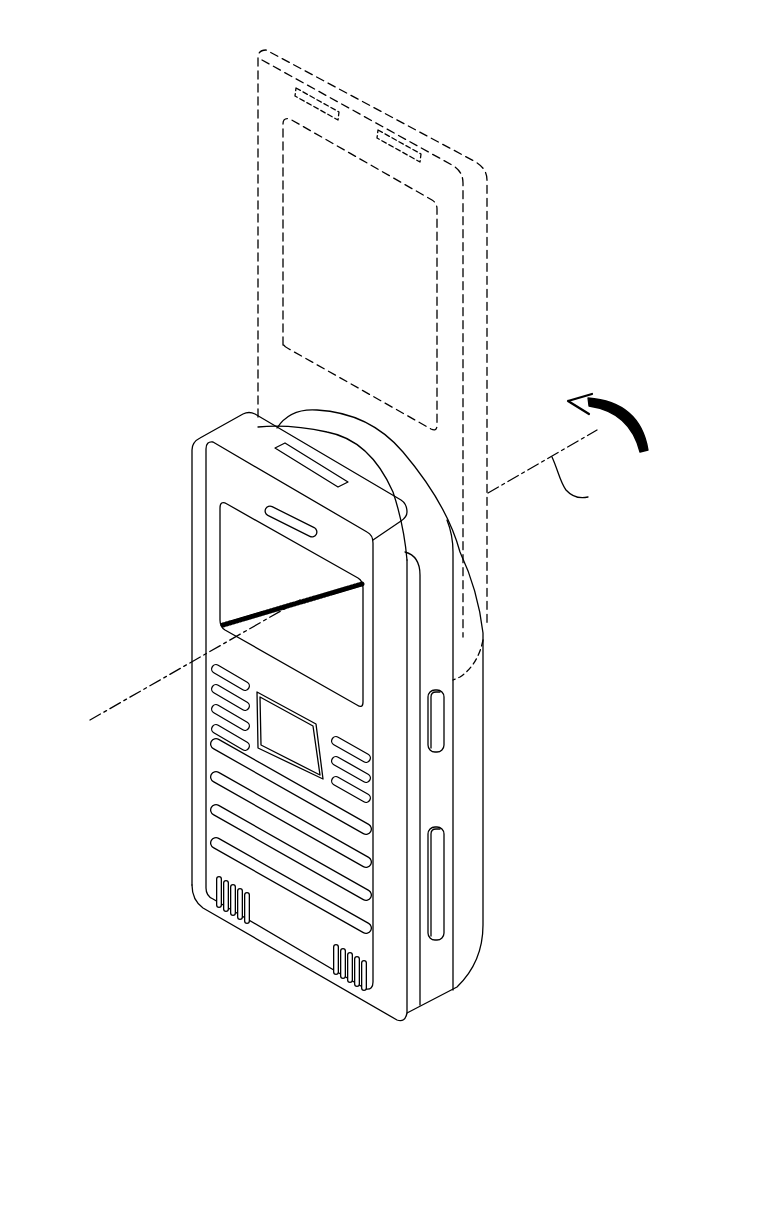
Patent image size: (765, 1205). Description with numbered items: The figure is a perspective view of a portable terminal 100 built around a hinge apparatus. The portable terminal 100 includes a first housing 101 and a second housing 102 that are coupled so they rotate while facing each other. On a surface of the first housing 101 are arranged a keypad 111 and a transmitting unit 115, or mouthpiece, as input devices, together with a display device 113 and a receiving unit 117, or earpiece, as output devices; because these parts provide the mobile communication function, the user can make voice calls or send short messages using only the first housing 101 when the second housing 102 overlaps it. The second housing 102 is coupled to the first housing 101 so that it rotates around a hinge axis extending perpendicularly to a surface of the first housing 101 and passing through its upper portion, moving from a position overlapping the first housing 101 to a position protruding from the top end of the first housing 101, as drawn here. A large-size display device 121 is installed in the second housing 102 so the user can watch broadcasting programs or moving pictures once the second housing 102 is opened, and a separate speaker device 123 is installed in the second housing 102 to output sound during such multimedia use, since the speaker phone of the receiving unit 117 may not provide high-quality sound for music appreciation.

The portable terminal 100 is at (192, 317).
The first housing 101 is at (181, 721).
The second housing 102 is at (490, 896).
The keypad 111 is at (217, 807).
The display device 113 is at (230, 582).
The transmitting unit 115 is at (347, 962).
The receiving unit 117 is at (267, 507).
The large-size display device 121 is at (303, 213).
The speaker device 123 is at (295, 92).